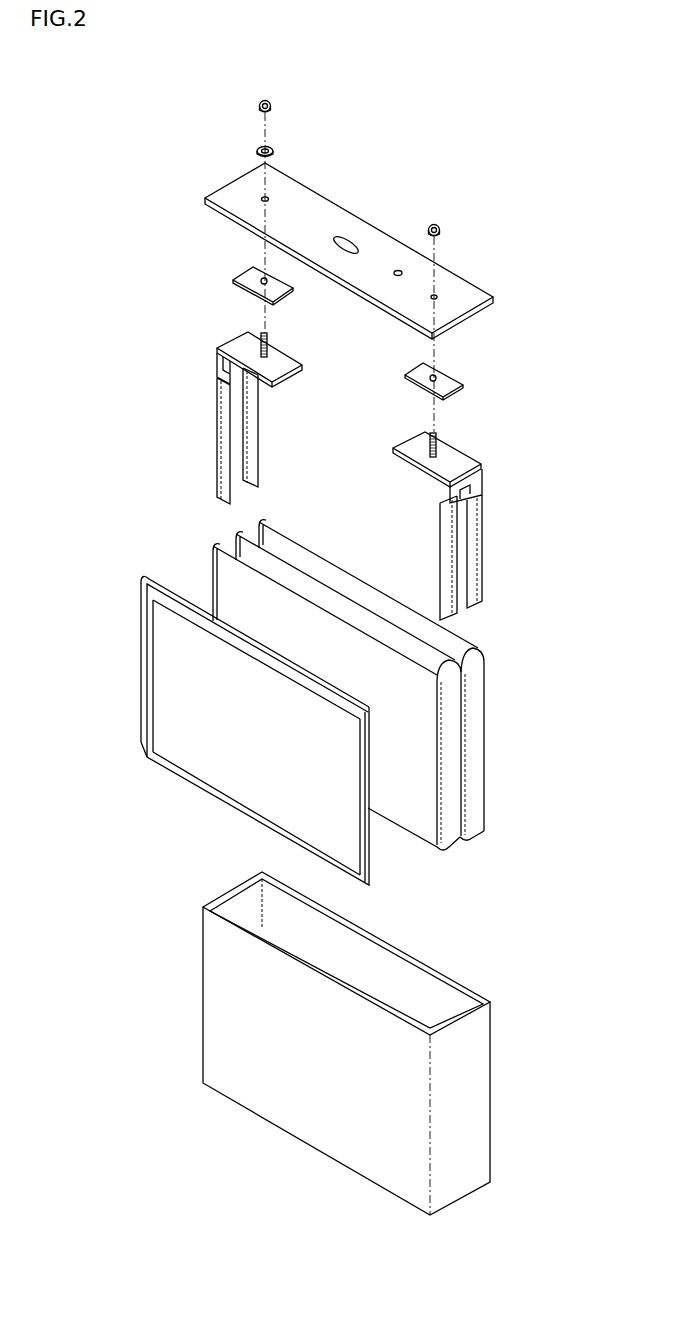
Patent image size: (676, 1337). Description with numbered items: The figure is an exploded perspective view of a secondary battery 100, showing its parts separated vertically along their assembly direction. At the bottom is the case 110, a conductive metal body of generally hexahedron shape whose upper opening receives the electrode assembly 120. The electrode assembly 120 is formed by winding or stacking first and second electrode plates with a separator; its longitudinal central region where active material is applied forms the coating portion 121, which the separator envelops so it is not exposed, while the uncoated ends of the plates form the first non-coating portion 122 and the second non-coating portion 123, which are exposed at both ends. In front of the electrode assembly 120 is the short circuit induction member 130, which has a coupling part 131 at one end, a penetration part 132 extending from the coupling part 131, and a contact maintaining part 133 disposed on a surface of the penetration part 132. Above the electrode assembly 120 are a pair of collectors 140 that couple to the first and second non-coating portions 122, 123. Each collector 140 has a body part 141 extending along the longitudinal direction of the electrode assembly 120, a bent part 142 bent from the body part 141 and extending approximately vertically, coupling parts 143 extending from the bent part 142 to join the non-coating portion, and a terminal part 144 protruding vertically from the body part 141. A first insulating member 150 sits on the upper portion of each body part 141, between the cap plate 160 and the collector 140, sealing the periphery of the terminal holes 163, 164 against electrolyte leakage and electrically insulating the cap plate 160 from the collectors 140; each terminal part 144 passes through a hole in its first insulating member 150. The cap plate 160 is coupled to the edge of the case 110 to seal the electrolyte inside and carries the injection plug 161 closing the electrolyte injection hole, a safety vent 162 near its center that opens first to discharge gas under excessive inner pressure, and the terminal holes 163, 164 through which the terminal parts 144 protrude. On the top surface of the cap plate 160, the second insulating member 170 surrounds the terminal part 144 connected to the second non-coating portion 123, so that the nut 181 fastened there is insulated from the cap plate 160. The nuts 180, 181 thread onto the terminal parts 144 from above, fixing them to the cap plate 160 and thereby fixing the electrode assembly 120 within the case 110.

The secondary battery 100 is at (106, 99).
The case 110 is at (483, 1104).
The electrode assembly 120 is at (501, 738).
The coating portion 121 is at (413, 830).
The first non-coating portion 122 is at (452, 848).
The second non-coating portion 123 is at (210, 558).
The short circuit induction member 130 is at (132, 598).
The coupling part 131 is at (142, 656).
The penetration part 132 is at (165, 768).
The contact maintaining part 133 is at (232, 785).
The collector 140 is at (197, 392).
The body part 141 is at (234, 343).
The bent part 142 is at (216, 357).
The coupling part 143 is at (218, 425).
The terminal part 144 is at (270, 341).
The first insulating member 150 is at (251, 280).
The cap plate 160 is at (479, 296).
The injection plug 161 is at (398, 270).
The safety vent 162 is at (345, 240).
The terminal hole 163 is at (267, 196).
The terminal hole 164 is at (435, 295).
The second insulating member 170 is at (254, 152).
The nut 180 is at (435, 225).
The nut 181 is at (259, 106).